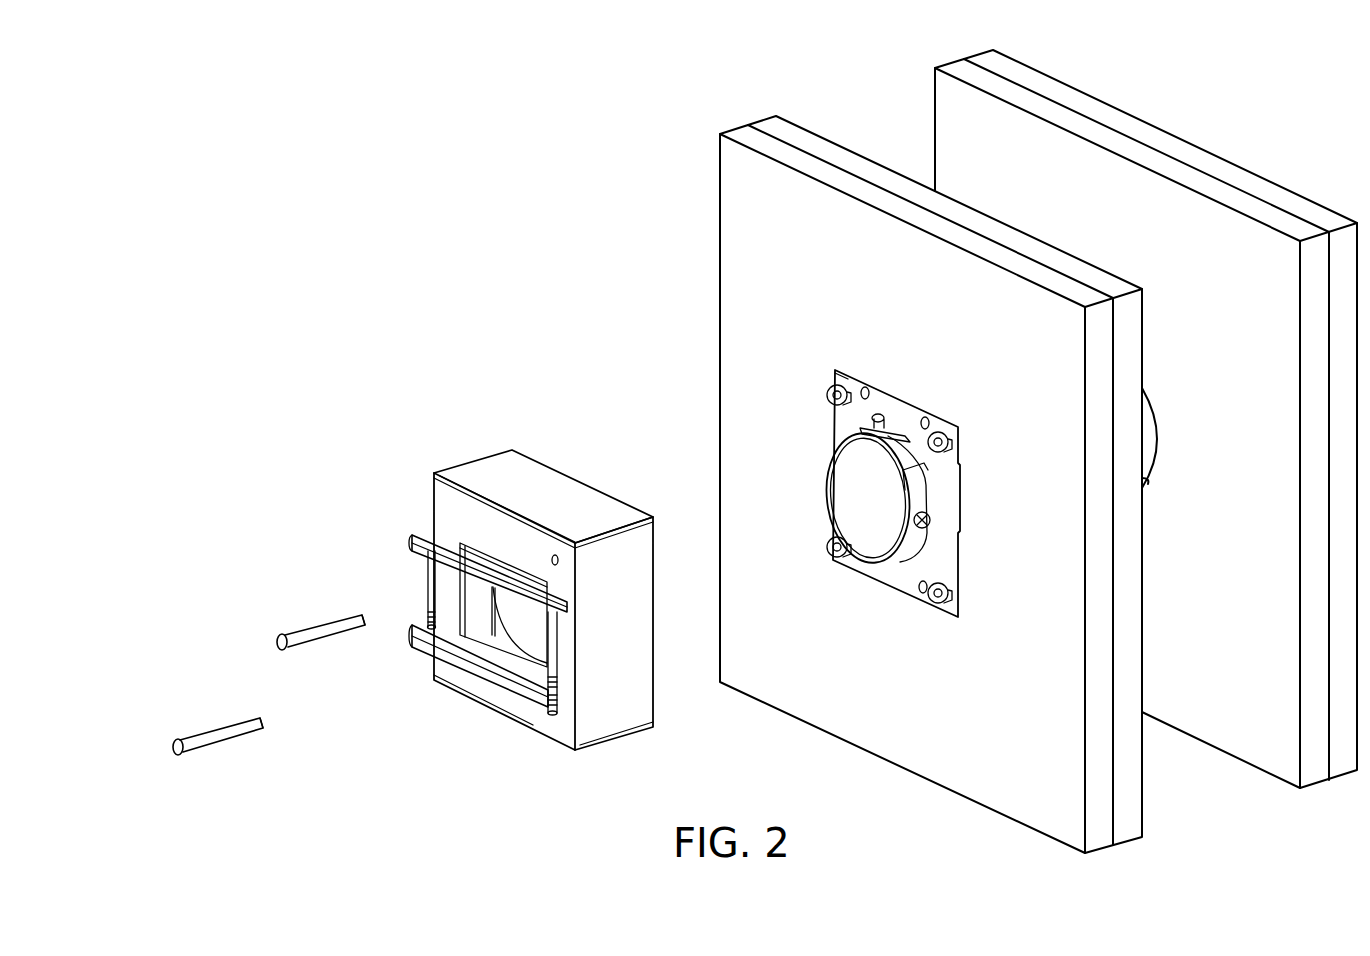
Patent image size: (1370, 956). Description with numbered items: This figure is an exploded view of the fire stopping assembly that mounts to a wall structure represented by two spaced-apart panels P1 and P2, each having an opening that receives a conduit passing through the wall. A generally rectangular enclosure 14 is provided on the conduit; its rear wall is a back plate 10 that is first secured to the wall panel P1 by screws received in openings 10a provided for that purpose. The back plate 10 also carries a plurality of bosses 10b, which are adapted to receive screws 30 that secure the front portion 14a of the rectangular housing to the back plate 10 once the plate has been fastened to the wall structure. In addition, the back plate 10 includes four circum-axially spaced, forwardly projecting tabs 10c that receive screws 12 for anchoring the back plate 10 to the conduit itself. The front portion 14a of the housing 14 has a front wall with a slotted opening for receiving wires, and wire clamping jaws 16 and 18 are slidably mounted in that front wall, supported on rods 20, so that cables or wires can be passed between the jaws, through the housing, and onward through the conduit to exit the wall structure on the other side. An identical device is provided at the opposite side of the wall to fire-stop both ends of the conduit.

The back plate 10 is at (847, 430).
The openings 10a is at (866, 386).
The bosses 10b is at (833, 378).
The forwardly projecting tabs 10c is at (930, 508).
The screws 12 is at (887, 416).
The rectangular enclosure 14 is at (545, 412).
The front portion 14a is at (488, 480).
The wire clamping jaw 16 is at (417, 540).
The wire clamping jaw 18 is at (438, 648).
The rods 20 is at (432, 592).
The screws 30 is at (303, 640).
The wall panel P1 is at (1119, 860).
The wall panel P2 is at (1327, 796).